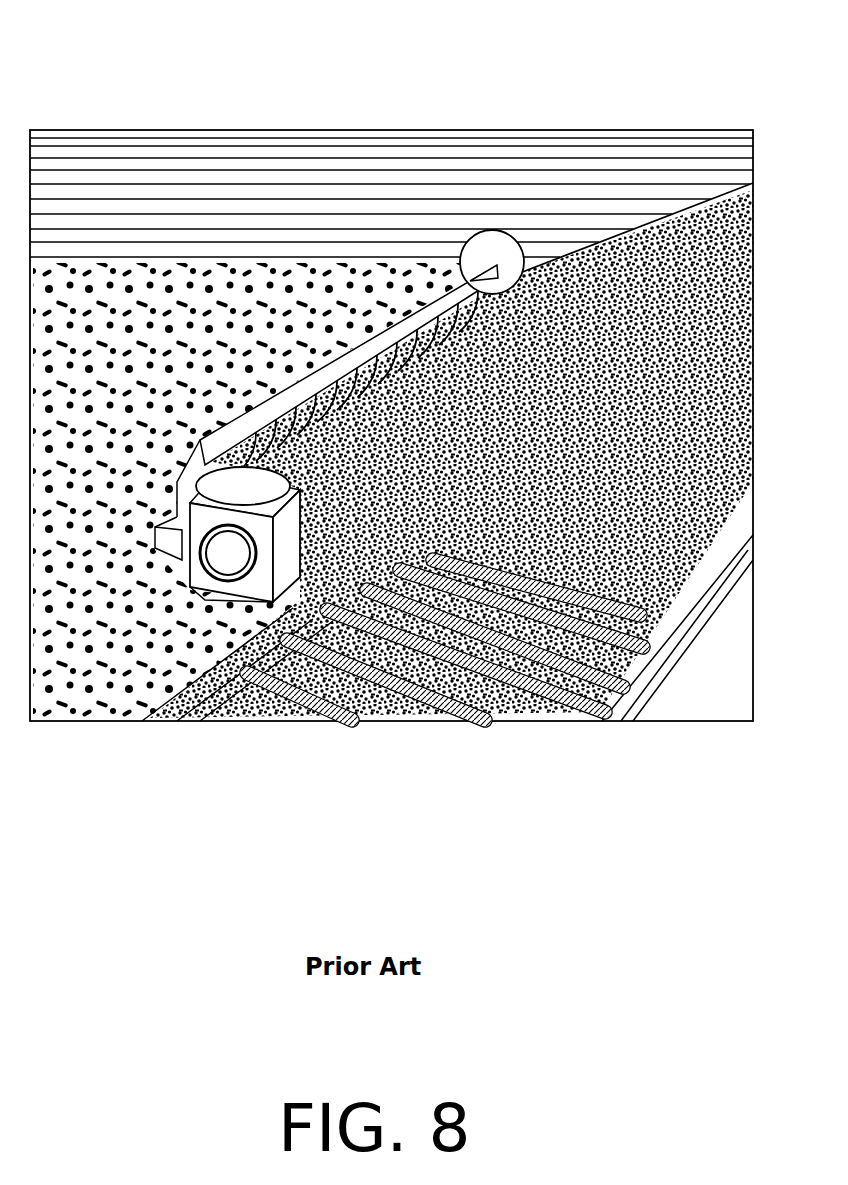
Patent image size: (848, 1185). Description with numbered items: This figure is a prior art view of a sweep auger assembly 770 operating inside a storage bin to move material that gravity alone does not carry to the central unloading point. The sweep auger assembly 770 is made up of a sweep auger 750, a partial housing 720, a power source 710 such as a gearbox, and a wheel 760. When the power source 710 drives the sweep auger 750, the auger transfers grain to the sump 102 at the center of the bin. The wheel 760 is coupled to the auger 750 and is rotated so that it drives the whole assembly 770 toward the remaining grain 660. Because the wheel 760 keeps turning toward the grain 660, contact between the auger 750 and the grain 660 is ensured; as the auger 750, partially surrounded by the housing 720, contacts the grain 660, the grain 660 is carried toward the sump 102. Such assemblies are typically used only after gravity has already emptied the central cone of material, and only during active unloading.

The sump 102 is at (300, 712).
The grain 660 is at (599, 415).
The power source 710 is at (228, 553).
The partial housing 720 is at (310, 387).
The sweep auger 750 is at (410, 325).
The wheel 760 is at (511, 231).
The sweep auger assembly 770 is at (218, 338).